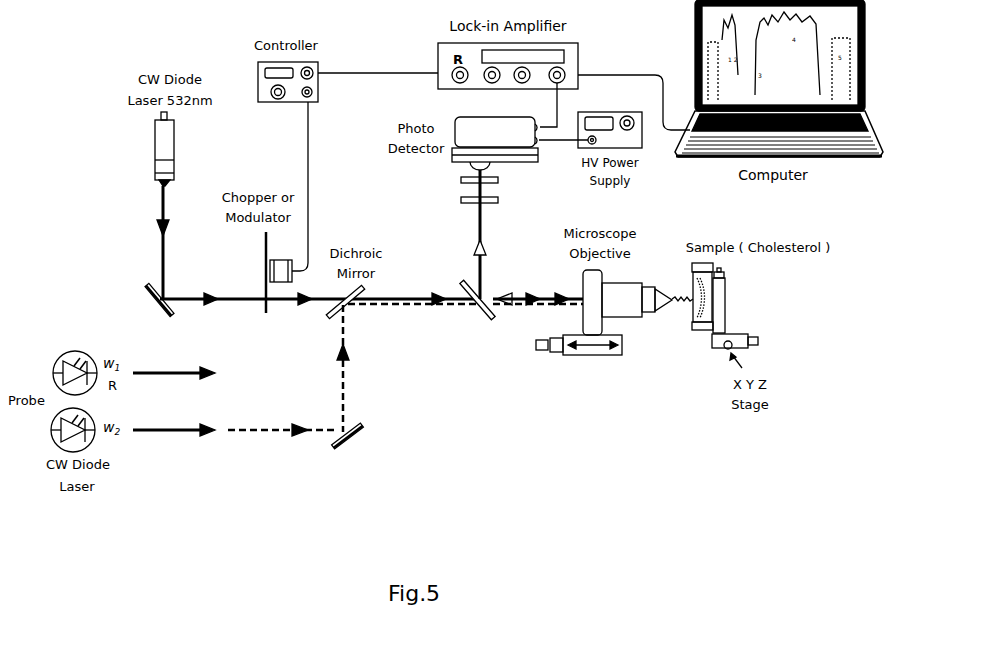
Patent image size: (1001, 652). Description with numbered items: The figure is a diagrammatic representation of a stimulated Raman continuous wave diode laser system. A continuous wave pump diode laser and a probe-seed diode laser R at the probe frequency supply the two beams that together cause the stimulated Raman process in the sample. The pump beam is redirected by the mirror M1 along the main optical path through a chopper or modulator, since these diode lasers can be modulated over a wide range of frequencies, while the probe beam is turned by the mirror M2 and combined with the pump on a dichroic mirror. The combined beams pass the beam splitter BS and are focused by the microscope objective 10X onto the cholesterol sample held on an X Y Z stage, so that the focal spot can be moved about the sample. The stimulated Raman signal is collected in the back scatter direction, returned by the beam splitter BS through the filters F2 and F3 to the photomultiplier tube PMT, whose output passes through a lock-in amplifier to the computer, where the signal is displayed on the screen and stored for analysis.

The mirror M1 is at (165, 308).
The mirror M2 is at (355, 443).
The beam splitter BS is at (477, 318).
The filter F2 is at (489, 182).
The filter F3 is at (489, 202).
The photomultiplier tube PMT is at (495, 143).
The microscope objective 10X is at (627, 302).